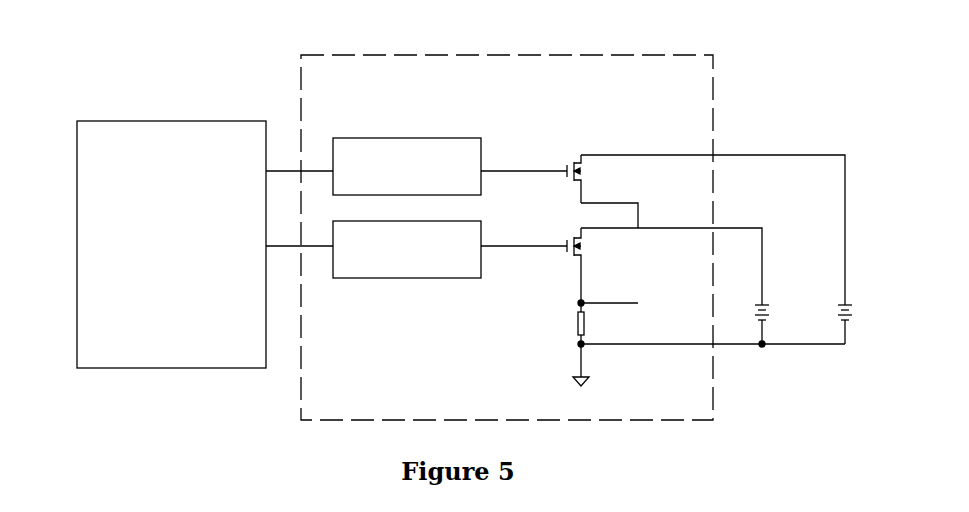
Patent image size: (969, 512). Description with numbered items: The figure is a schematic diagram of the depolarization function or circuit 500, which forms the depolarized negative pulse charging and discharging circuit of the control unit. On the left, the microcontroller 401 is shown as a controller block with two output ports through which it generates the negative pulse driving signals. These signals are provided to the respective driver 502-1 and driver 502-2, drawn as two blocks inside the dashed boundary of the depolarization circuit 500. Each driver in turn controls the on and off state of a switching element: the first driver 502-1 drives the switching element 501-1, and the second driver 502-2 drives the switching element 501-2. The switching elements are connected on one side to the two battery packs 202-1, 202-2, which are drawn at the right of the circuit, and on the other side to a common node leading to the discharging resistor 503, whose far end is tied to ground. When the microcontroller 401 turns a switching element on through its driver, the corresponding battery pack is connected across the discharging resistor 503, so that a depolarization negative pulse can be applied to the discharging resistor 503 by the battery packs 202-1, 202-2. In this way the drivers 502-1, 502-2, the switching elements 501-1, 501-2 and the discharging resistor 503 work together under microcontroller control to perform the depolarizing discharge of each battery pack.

The microcontroller 401 is at (171, 244).
The depolarization function or circuit 500 is at (507, 237).
The driver 502-1 is at (421, 157).
The driver 502-2 is at (409, 262).
The switching element 501-1 is at (598, 179).
The switching element 501-2 is at (598, 265).
The discharging resistor 503 is at (598, 323).
The battery pack 202-1 is at (785, 314).
The battery pack 202-2 is at (868, 314).